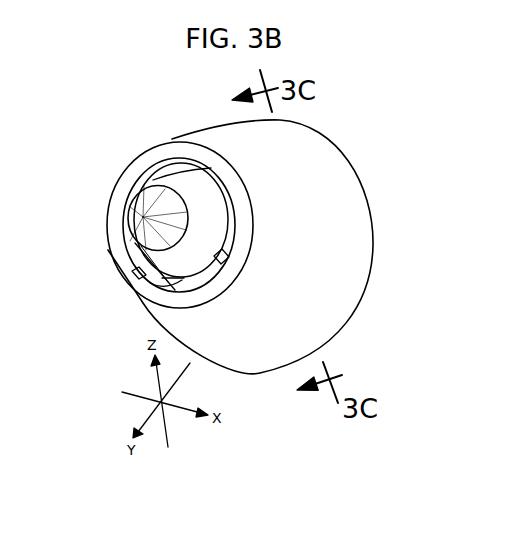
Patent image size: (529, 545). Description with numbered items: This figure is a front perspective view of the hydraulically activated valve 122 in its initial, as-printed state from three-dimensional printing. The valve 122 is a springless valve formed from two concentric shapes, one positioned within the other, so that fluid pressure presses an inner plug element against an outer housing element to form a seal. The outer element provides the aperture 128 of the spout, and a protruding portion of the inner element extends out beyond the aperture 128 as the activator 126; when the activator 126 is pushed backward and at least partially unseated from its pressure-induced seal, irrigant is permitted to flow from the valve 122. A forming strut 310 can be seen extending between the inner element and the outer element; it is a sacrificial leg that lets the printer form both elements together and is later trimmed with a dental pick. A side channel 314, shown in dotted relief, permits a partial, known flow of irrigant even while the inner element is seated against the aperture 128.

The hydraulically activated valve 122 is at (165, 126).
The activator 126 is at (130, 220).
The aperture 128 is at (126, 181).
The forming strut 310 is at (228, 265).
The side channel 314 is at (134, 274).